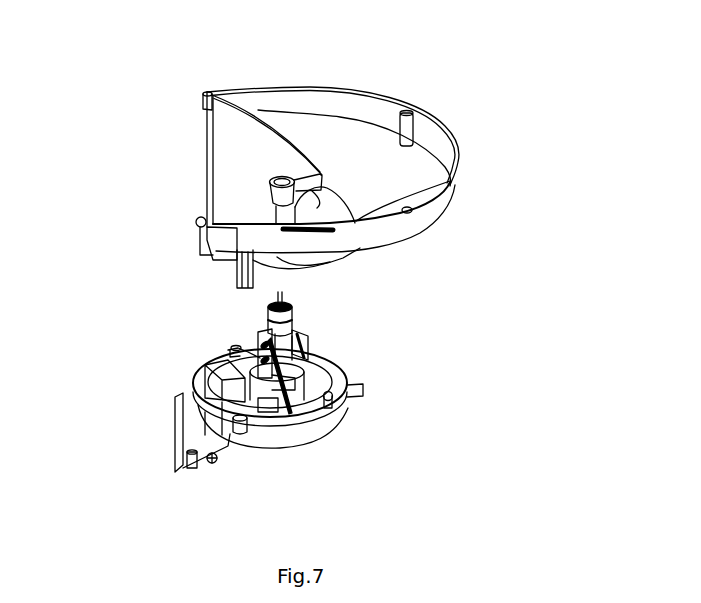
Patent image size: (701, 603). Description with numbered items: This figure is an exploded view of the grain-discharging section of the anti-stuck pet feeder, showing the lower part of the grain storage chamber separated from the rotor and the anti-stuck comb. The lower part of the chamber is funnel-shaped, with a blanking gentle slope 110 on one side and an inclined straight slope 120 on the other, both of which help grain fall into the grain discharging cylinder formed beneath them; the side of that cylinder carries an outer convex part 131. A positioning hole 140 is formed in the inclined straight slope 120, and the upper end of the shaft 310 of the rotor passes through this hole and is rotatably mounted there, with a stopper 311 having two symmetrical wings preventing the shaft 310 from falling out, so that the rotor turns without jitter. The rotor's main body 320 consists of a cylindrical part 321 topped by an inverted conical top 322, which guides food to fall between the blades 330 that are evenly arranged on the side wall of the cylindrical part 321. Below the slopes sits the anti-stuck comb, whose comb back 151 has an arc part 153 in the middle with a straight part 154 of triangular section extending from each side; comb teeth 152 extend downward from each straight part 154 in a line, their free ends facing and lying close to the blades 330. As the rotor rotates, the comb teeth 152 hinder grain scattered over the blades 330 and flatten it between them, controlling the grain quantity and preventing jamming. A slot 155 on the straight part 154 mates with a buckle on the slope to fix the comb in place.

The blanking gentle slope 110 is at (240, 148).
The inclined straight slope 120 is at (427, 164).
The outer convex part 131 is at (207, 200).
The positioning hole 140 is at (288, 177).
The shaft 310 is at (306, 333).
The stopper 311 is at (293, 308).
The main body 320 is at (310, 377).
The cylindrical part 321 is at (190, 402).
The inverted conical top 322 is at (268, 412).
The blades 330 is at (310, 425).
The comb back 151 is at (332, 397).
The comb teeth 152 is at (306, 422).
The arc part 153 is at (257, 335).
The straight part 154 is at (259, 357).
The slot 155 is at (232, 354).